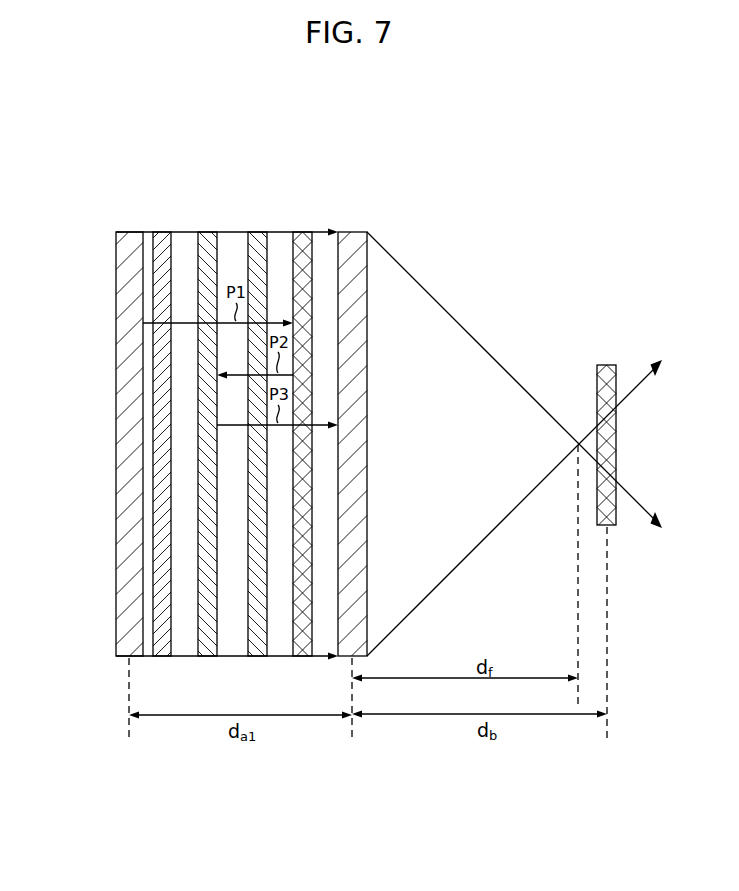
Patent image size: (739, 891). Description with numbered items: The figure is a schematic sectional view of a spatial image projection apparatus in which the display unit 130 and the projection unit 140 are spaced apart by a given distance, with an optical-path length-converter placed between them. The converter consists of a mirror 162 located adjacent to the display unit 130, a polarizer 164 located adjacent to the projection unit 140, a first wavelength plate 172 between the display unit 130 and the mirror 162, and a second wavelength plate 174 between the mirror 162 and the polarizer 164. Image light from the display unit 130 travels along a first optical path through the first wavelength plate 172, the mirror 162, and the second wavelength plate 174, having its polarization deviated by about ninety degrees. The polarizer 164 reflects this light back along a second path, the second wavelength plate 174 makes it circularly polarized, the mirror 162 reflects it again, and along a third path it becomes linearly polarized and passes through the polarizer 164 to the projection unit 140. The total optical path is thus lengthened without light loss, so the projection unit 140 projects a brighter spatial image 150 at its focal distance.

The display unit 130 is at (117, 232).
The first wavelength plate 172 is at (164, 232).
The mirror 162 is at (210, 232).
The second wavelength plate 174 is at (260, 232).
The polarizer 164 is at (304, 232).
The projection unit 140 is at (367, 232).
The spatial image 150 is at (609, 365).